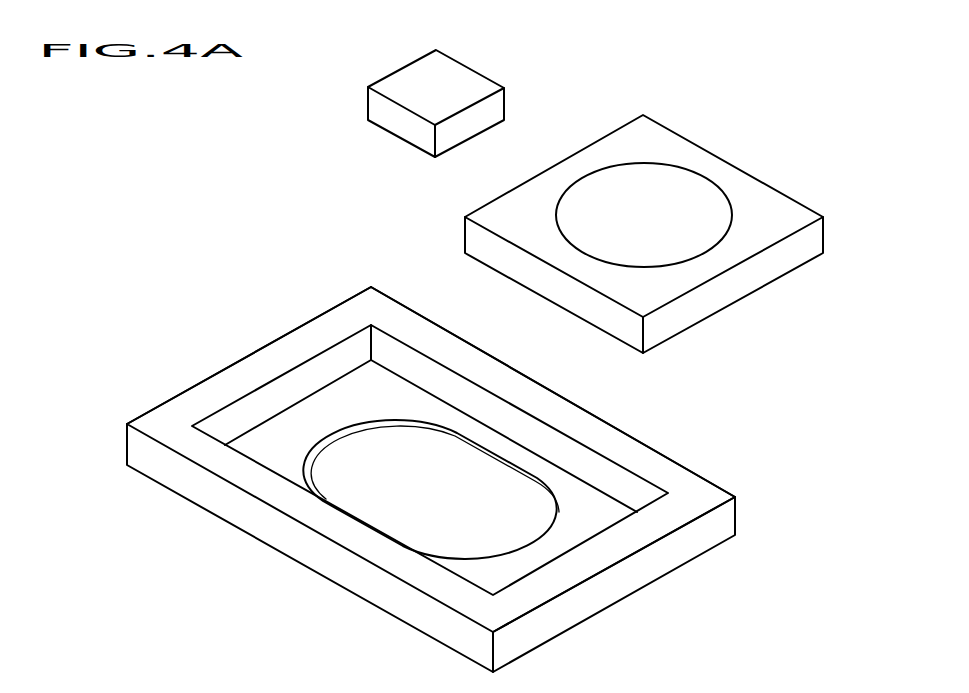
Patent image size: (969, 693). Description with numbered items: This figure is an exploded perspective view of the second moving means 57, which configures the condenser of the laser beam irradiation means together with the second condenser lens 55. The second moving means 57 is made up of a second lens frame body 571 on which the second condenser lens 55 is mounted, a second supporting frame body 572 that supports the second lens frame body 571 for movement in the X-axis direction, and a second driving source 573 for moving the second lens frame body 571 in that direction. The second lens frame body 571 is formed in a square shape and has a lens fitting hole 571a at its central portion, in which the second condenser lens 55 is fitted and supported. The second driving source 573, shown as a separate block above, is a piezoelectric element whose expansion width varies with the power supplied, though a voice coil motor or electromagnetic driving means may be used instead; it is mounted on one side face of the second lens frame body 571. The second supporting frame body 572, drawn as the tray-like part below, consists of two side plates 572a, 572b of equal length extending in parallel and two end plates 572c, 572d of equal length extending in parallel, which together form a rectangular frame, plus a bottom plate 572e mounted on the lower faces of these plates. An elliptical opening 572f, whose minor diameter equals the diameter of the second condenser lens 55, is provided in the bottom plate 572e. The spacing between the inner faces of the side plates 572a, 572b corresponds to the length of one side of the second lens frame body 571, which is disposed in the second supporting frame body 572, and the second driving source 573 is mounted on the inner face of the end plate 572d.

The second moving means 57 is at (425, 472).
The second supporting frame body 572 is at (425, 472).
The side plate 572a is at (367, 538).
The side plate 572b is at (648, 465).
The end plate 572c is at (578, 566).
The end plate 572d is at (190, 407).
The bottom plate 572e is at (315, 425).
The elliptical opening 572f is at (367, 493).
The second lens frame body 571 is at (635, 234).
The lens fitting hole 571a is at (603, 266).
The second condenser lens 55 is at (607, 188).
The second driving source 573 is at (417, 78).